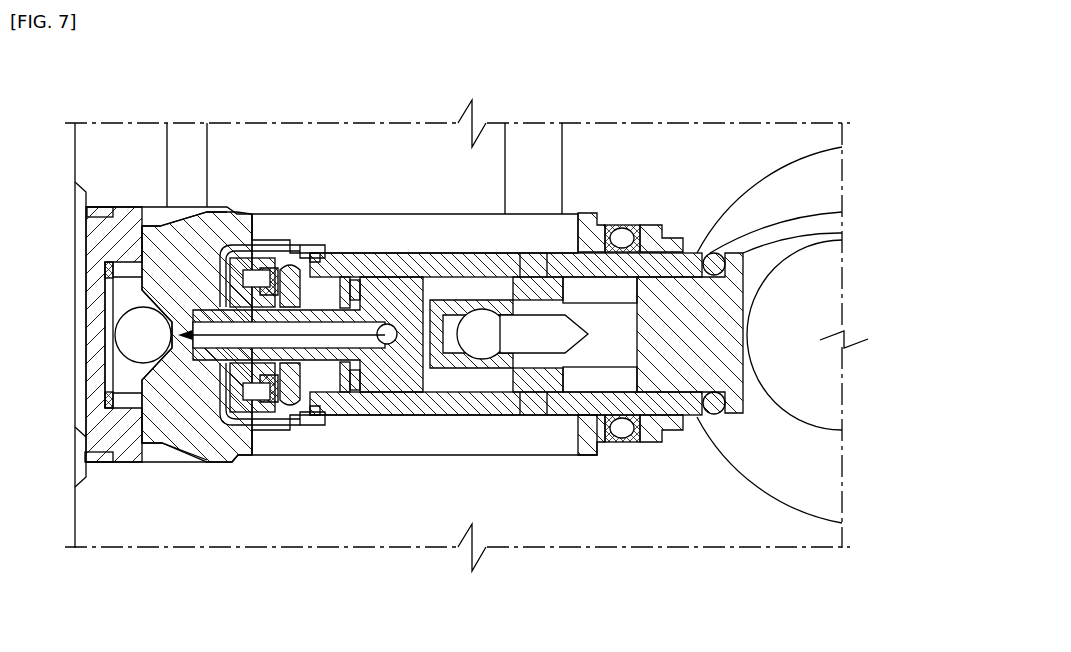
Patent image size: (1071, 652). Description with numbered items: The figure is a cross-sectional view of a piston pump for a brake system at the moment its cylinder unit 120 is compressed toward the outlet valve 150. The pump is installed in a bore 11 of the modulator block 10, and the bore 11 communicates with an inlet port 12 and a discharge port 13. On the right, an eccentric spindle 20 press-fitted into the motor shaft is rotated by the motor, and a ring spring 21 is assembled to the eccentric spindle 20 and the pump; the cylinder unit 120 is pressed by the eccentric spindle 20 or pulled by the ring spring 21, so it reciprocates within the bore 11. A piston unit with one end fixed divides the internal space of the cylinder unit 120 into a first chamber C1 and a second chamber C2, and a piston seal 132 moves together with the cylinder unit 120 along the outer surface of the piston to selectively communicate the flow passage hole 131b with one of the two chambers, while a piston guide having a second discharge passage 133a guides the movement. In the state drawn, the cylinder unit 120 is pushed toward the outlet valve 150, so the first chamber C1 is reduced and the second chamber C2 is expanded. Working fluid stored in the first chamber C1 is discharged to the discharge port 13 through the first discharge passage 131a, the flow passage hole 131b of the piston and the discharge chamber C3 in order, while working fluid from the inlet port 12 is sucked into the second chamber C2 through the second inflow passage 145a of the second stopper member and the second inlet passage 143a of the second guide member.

The modulator block 10 is at (564, 522).
The bore 11 is at (422, 458).
The inlet port 12 is at (533, 146).
The discharge port 13 is at (192, 145).
The eccentric spindle 20 is at (813, 260).
The ring spring 21 is at (768, 233).
The cylinder unit 120 is at (470, 242).
The first discharge passage 131a is at (416, 260).
The flow passage hole 131b is at (318, 330).
The piston seal 132 is at (386, 290).
The second discharge passage 133a is at (350, 268).
The second inlet passage 143a is at (262, 273).
The second inflow passage 145a is at (268, 280).
The outlet valve 150 is at (108, 196).
The first chamber C1 is at (471, 383).
The second chamber C2 is at (322, 393).
The discharge chamber C3 is at (138, 394).